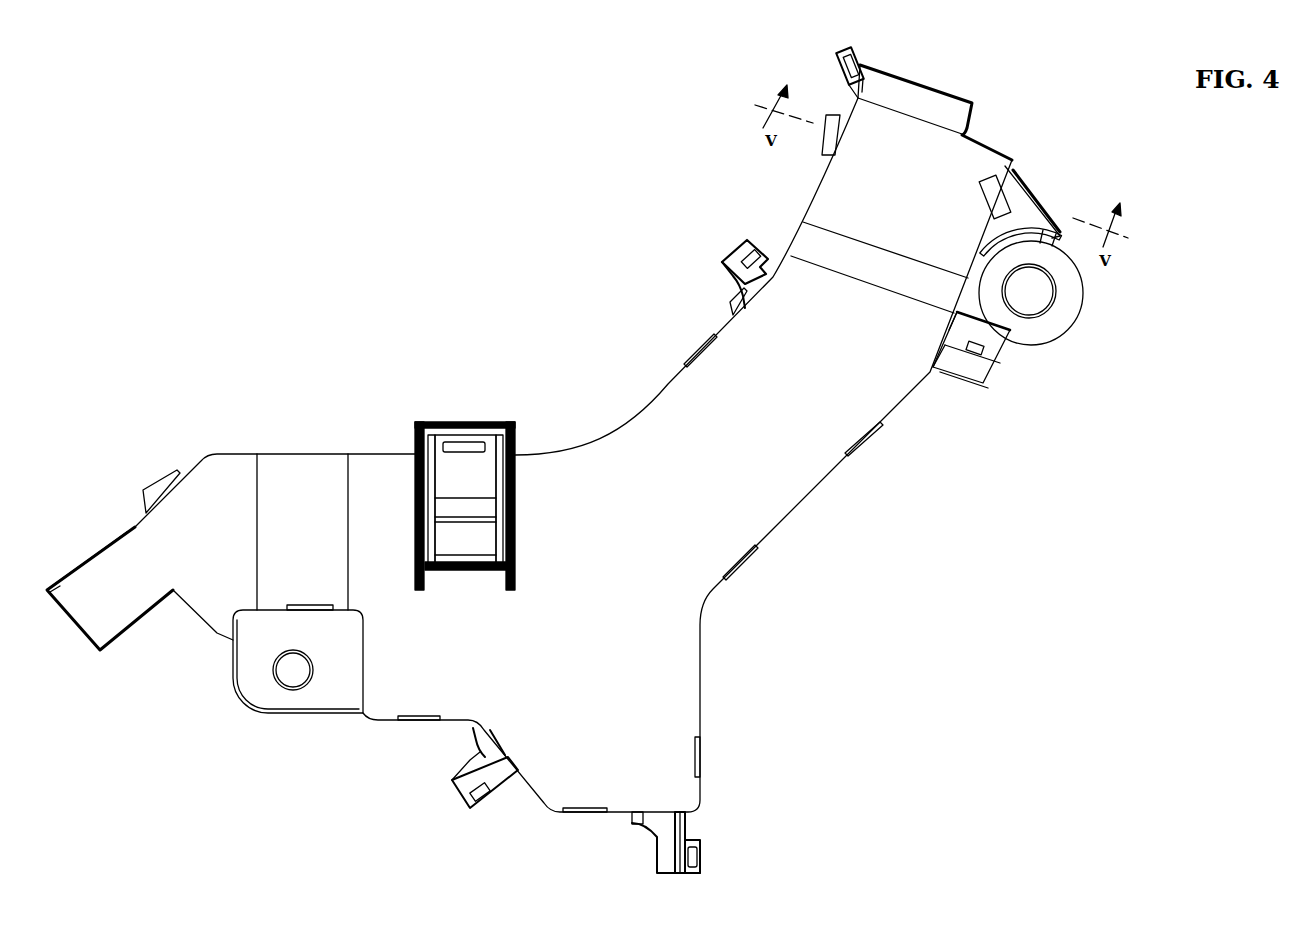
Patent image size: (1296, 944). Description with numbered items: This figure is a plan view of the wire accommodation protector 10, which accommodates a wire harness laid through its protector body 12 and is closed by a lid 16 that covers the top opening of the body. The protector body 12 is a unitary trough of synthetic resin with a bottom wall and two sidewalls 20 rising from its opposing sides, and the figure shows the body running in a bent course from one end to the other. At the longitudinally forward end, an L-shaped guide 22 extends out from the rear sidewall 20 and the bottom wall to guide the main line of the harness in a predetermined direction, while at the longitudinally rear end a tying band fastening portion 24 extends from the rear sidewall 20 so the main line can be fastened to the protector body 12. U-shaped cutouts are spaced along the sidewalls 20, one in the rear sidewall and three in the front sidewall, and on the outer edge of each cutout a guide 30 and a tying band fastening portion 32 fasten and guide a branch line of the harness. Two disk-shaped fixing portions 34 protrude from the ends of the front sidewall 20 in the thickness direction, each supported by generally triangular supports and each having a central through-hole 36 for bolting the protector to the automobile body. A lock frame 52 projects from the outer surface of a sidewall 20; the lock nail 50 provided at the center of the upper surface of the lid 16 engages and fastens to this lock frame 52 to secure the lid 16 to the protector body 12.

The wire accommodation protector 10 is at (477, 270).
The protector body 12 is at (1068, 376).
The lid 16 is at (514, 336).
The sidewall 20 is at (648, 393).
The L-shaped guide 22 is at (117, 587).
The tying band fastening portion 24 is at (862, 56).
The guide 30 is at (737, 272).
The tying band fastening portion 32 is at (745, 240).
The disk-shaped fixing portion 34 is at (290, 705).
The through-hole 36 is at (276, 675).
The lock nail 50 is at (488, 442).
The lock frame 52 is at (462, 428).